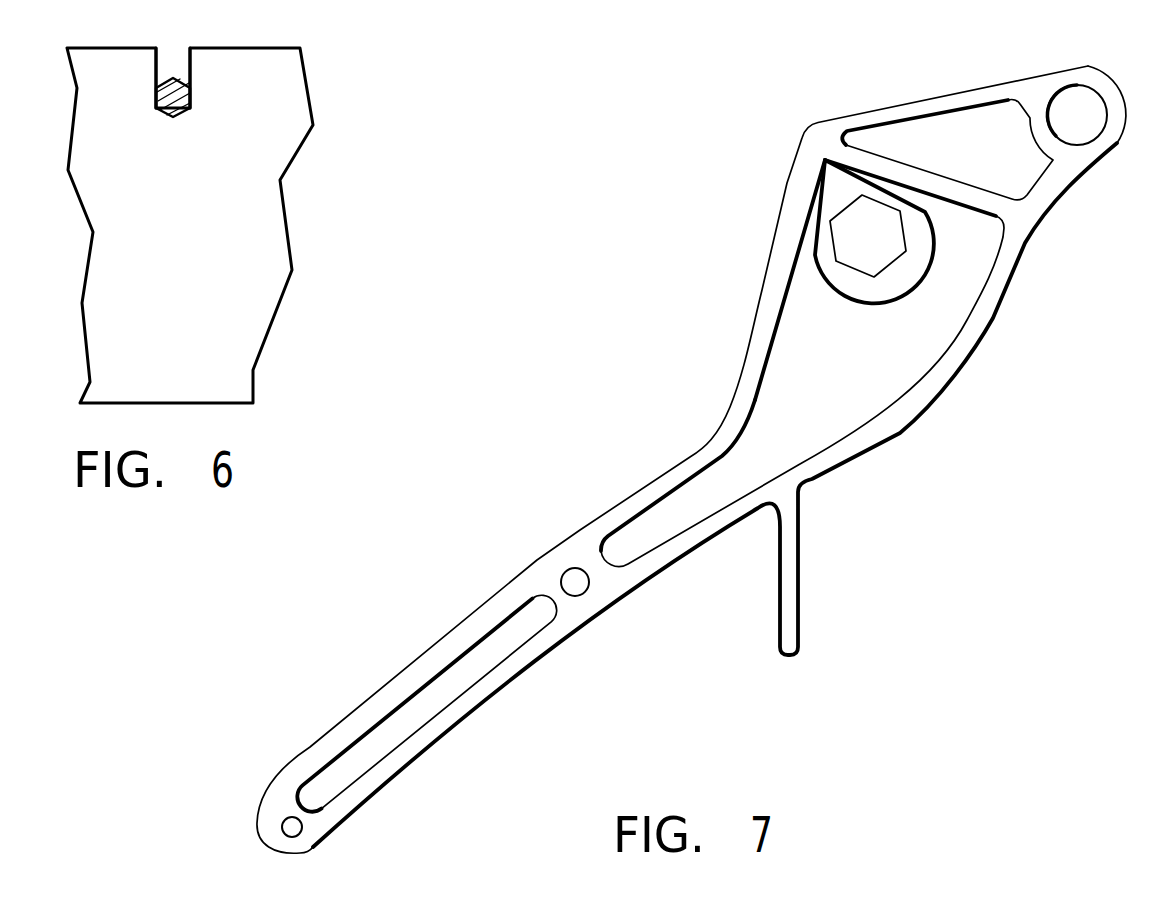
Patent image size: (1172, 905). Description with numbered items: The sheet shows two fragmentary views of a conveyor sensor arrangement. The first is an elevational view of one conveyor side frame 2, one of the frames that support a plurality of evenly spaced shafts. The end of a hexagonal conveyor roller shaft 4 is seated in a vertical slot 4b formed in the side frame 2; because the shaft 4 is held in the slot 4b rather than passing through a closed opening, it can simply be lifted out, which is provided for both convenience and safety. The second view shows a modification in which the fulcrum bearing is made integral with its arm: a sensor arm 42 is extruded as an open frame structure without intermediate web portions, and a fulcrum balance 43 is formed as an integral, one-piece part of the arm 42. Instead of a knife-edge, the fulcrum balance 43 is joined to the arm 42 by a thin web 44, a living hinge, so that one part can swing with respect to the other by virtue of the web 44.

In FIG. 6, the conveyor side frame 2 is at (235, 277).
In FIG. 6, the shaft 4 is at (186, 110).
In FIG. 6, the vertical slot 4b is at (190, 68).
In FIG. 7, the sensor arm 42 is at (1007, 288).
In FIG. 7, the fulcrum balance 43 is at (888, 283).
In FIG. 7, the thin web 44 is at (818, 178).